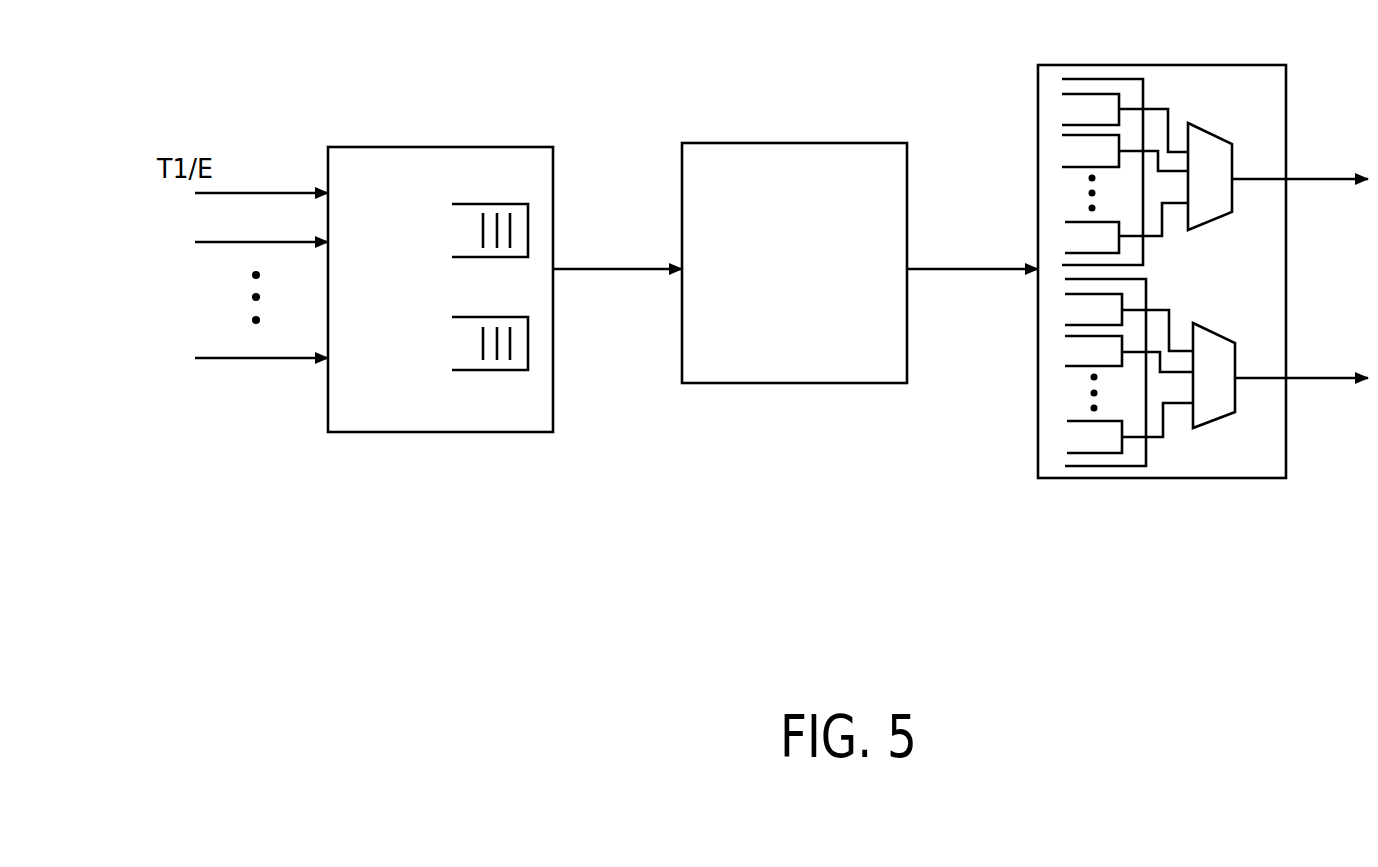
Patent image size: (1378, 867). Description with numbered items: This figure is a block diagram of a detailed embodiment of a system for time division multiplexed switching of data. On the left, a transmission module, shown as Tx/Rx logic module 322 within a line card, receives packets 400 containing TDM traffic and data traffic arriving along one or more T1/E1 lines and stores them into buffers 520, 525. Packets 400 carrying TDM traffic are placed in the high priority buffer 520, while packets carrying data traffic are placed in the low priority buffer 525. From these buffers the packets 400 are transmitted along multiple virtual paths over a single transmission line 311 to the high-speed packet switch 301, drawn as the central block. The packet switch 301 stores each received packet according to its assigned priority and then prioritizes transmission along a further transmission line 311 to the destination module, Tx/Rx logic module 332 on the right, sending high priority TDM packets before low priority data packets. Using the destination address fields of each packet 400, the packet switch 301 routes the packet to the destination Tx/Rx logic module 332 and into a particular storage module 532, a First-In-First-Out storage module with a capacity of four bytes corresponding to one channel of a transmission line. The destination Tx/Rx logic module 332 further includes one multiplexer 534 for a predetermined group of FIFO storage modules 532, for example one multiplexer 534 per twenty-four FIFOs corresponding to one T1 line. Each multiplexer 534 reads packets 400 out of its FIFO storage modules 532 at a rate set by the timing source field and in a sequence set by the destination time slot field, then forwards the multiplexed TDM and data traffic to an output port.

The high-speed packet switch 301 is at (853, 383).
The transmission line 311 is at (593, 269).
The Tx/Rx logic module 322 is at (442, 432).
The Tx/Rx logic module 332 is at (1233, 478).
The packets 400 is at (483, 232).
The high priority buffer 520 is at (470, 204).
The low priority buffer 525 is at (470, 317).
The FIFO storage module 532 is at (1093, 92).
The multiplexer 534 is at (1198, 120).